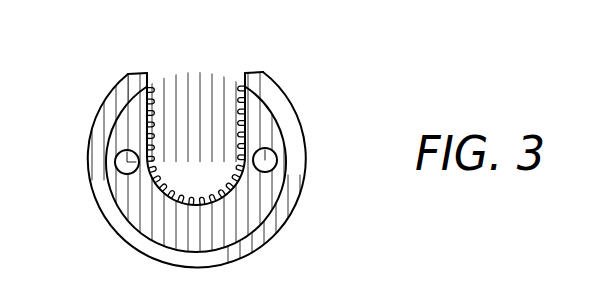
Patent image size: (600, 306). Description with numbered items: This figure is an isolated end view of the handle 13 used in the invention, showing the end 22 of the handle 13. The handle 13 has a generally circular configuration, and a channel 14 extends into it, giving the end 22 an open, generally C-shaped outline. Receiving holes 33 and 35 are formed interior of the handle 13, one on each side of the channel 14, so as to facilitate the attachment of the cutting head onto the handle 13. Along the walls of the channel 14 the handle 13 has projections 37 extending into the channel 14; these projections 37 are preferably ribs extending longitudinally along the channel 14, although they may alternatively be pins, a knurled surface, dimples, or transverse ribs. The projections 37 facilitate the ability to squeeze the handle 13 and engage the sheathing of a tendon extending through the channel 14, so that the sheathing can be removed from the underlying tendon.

The handle 13 is at (288, 222).
The channel 14 is at (217, 92).
The end of the handle 22 is at (290, 106).
The receiving hole 33 is at (277, 155).
The receiving hole 35 is at (114, 167).
The projections 37 is at (162, 111).